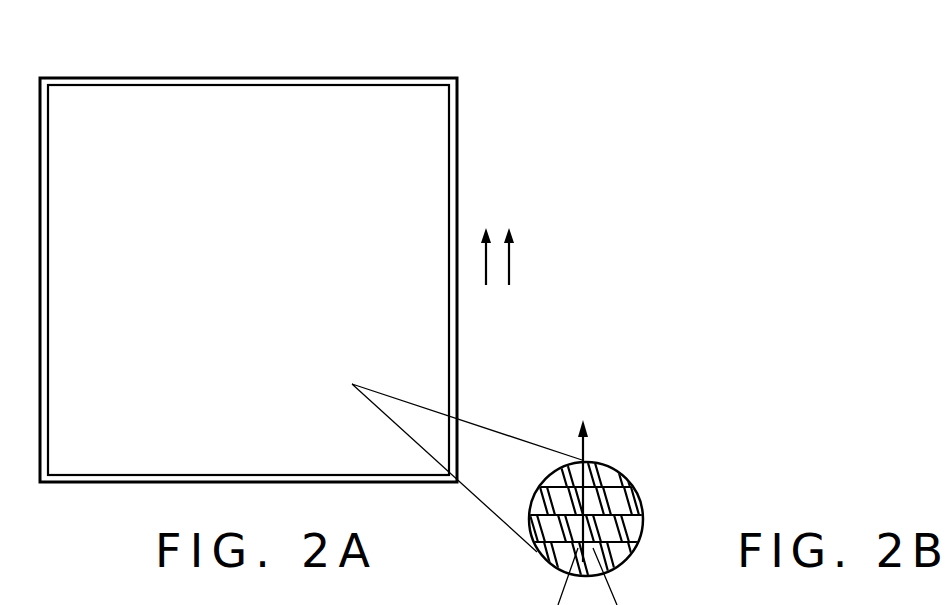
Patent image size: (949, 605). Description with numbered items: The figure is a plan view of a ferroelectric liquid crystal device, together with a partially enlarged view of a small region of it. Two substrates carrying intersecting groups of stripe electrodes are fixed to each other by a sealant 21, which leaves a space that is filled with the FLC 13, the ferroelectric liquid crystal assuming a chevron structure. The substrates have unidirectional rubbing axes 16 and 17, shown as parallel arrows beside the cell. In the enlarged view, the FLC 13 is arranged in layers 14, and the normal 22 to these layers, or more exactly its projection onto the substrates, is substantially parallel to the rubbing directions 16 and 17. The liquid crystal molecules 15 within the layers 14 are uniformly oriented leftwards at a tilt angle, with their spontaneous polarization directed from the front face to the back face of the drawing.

In FIG. 2A, the FLC 13 is at (194, 117).
In FIG. 2A, the sealant 21 is at (377, 78).
In FIG. 2A, the rubbing axis 16 is at (483, 258).
In FIG. 2A, the rubbing axis 17 is at (512, 265).
In FIG. 2B, the normal 22 is at (583, 442).
In FIG. 2B, the liquid crystal molecules 15 is at (628, 500).
In FIG. 2B, the layers 14 is at (633, 528).